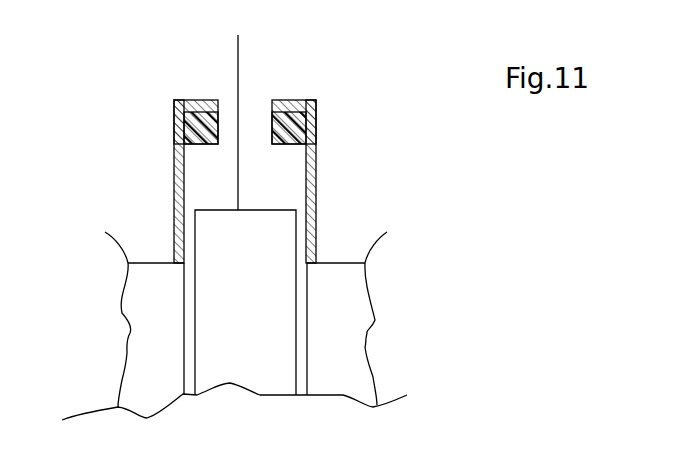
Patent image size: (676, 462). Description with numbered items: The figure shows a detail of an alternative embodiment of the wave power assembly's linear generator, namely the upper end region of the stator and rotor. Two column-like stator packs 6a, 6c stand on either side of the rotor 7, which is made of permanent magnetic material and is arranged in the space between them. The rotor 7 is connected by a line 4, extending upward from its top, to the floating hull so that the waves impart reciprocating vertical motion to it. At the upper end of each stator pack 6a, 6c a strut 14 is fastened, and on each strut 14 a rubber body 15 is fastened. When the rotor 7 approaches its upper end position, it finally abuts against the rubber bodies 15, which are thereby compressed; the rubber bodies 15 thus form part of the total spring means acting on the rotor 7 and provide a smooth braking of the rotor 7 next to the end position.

The line 4 is at (240, 73).
The rotor 7 is at (273, 240).
The strut 14 is at (178, 160).
The rubber body 15 is at (195, 105).
The stator 6a is at (140, 308).
The stator 6c is at (353, 305).